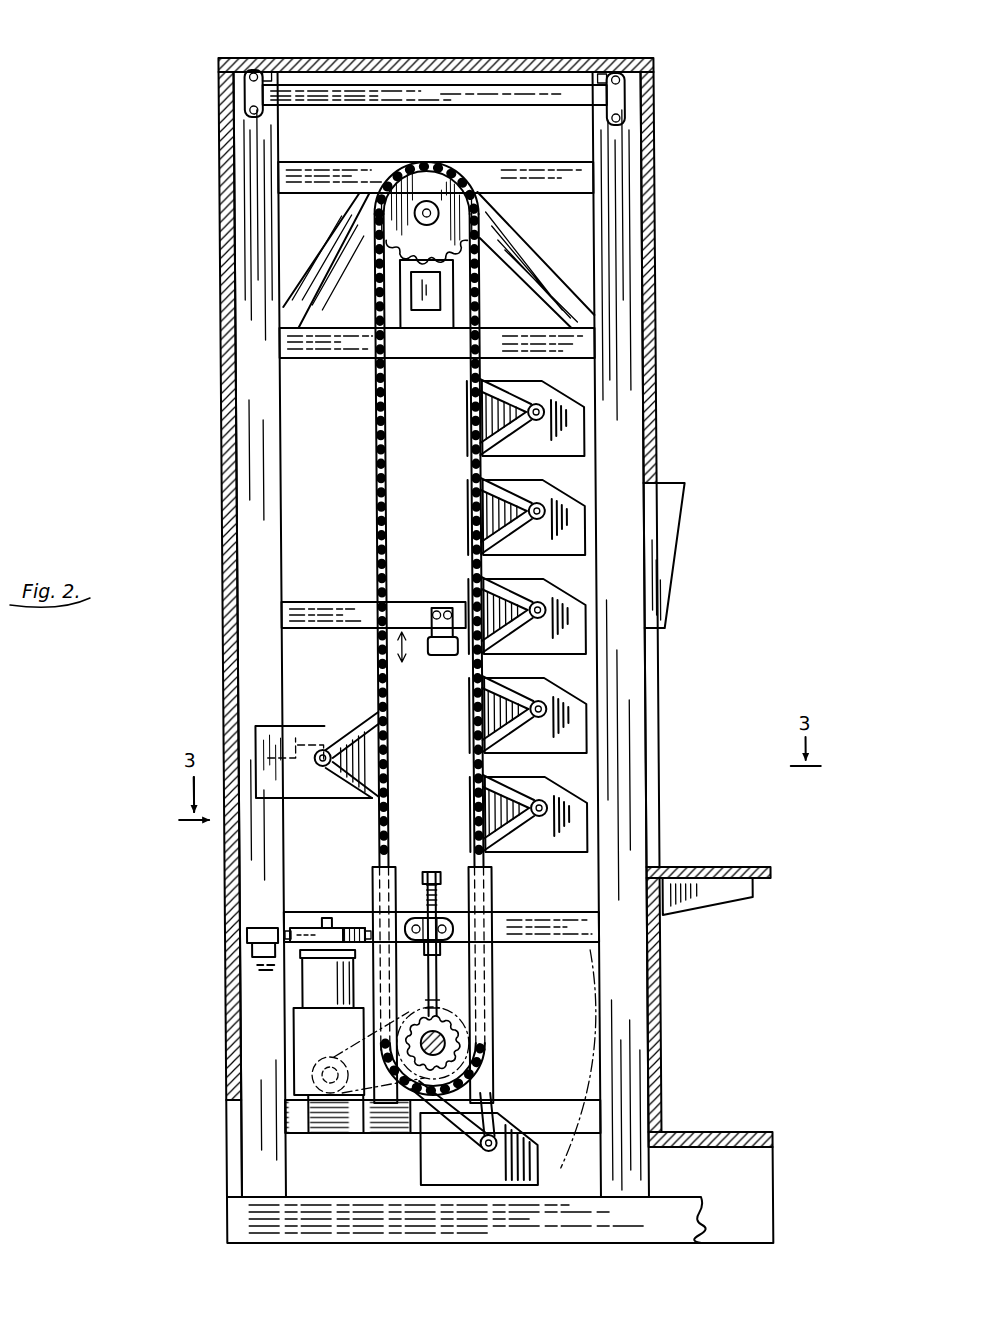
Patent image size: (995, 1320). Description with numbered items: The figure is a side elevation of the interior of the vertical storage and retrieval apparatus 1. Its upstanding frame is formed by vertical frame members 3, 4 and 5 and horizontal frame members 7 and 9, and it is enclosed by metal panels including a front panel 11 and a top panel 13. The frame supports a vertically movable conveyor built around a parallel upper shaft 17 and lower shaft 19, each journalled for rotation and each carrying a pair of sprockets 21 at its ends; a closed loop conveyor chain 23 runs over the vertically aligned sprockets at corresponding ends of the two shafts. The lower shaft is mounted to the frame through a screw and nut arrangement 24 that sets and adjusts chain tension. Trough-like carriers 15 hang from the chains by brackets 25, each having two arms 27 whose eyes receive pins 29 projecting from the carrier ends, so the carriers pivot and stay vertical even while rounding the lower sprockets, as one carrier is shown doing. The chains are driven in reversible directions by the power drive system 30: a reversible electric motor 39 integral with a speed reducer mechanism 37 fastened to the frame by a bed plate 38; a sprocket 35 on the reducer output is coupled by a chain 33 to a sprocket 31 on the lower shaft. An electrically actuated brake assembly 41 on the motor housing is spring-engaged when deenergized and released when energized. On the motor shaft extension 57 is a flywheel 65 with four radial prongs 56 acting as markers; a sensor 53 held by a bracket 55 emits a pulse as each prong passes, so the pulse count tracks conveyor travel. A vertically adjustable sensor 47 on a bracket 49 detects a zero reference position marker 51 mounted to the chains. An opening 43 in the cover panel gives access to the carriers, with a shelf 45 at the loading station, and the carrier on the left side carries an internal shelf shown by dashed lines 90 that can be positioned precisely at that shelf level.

The vertical storage and retrieval apparatus 1 is at (666, 158).
The vertical frame member 3 is at (248, 247).
The vertical frame member 4 is at (486, 986).
The vertical frame member 5 is at (608, 232).
The horizontal frame member 7 is at (572, 930).
The horizontal frame member 9 is at (558, 1108).
The front panel 11 is at (655, 328).
The top panel 13 is at (260, 72).
The carrier 15 is at (555, 442).
The upper shaft 17 is at (440, 215).
The lower shaft 19 is at (448, 1034).
The sprocket 21 is at (437, 184).
The conveyor chain 23 is at (373, 530).
The screw and nut arrangement 24 is at (442, 846).
The bracket 25 is at (530, 398).
The arm 27 is at (512, 530).
The pin 29 is at (533, 520).
The power drive system 30 is at (262, 1038).
The sprocket 31 is at (462, 1046).
The chain 33 is at (347, 1050).
The sprocket 35 is at (320, 1105).
The speed reducer mechanism 37 is at (302, 1048).
The bed plate 38 is at (305, 1102).
The electric motor 39 is at (326, 997).
The brake assembly 41 is at (340, 960).
The opening 43 is at (652, 765).
The shelf 45 is at (732, 856).
The sensor 47 is at (437, 658).
The bracket 49 is at (434, 608).
The zero reference position marker 51 is at (466, 672).
The sensor 53 is at (240, 934).
The bracket 55 is at (245, 949).
The prong 56 is at (286, 940).
The motor shaft extension 57 is at (320, 918).
The flywheel 65 is at (346, 926).
The shelf 90 is at (290, 752).